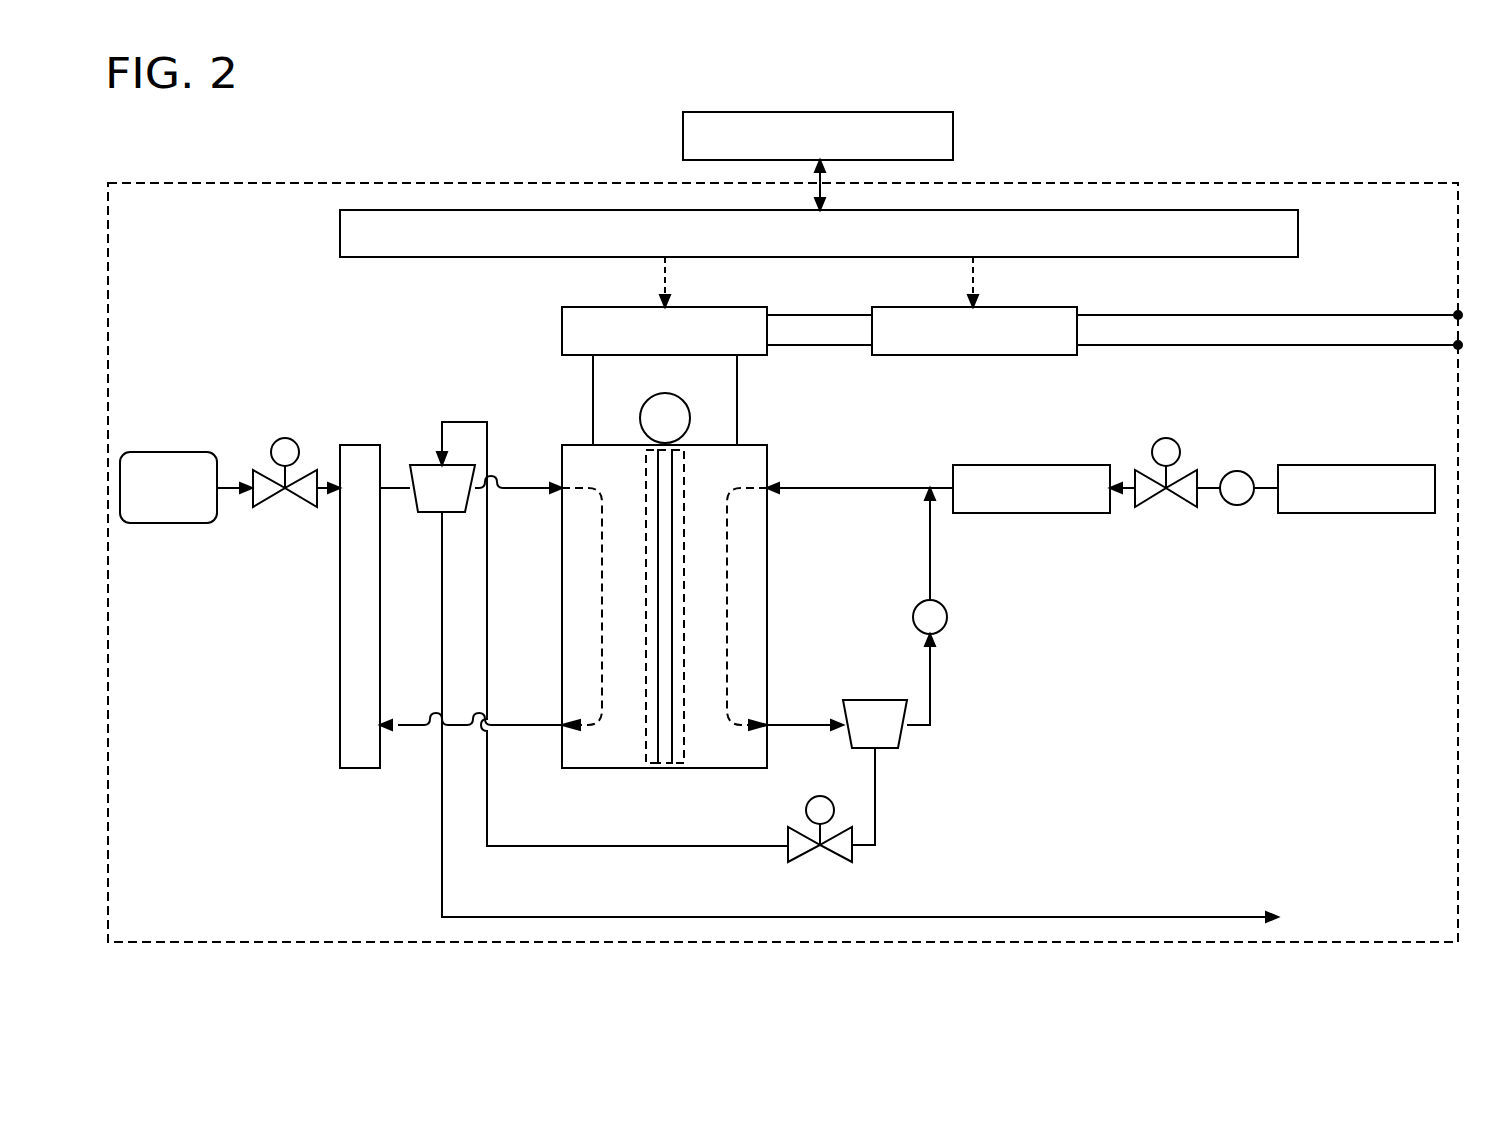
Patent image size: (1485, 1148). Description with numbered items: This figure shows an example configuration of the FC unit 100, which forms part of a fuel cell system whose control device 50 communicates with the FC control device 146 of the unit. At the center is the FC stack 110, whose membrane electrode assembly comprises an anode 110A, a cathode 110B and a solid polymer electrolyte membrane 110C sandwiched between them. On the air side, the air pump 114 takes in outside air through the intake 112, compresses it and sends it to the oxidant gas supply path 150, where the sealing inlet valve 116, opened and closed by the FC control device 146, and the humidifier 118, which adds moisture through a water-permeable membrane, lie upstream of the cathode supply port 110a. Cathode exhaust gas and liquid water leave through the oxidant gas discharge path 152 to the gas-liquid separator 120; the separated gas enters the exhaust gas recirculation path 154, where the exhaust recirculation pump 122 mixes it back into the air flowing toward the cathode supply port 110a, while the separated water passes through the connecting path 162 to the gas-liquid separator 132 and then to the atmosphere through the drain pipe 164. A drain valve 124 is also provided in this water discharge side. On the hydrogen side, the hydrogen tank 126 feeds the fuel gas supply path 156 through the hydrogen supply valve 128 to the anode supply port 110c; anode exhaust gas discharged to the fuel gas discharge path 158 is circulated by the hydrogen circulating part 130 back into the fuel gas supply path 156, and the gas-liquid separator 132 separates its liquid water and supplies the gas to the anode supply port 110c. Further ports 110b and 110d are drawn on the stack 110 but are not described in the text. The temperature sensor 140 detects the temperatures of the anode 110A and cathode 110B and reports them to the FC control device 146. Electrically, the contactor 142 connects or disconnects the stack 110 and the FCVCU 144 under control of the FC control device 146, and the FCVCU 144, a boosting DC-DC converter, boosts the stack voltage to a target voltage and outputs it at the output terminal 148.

The control device 50 is at (955, 135).
The FC unit 100 is at (1385, 183).
The FC control device 146 is at (1300, 234).
The contactor 142 is at (706, 307).
The fuel cell voltage control unit (FCVCU) 144 is at (1015, 307).
The output terminal 148 is at (1455, 314).
The temperature sensor 140 is at (668, 394).
The FC stack 110 is at (768, 605).
The anode 110A is at (652, 766).
The cathode 110B is at (679, 766).
The solid polymer electrolyte membrane 110C is at (664, 766).
The cathode supply port 110a is at (769, 485).
The cathode outlet 110b is at (769, 723).
The anode supply port 110c is at (560, 485).
The anode outlet 110d is at (560, 723).
The hydrogen tank 126 is at (155, 452).
The fuel gas supply path 156 is at (232, 495).
The hydrogen supply valve 128 is at (297, 505).
The hydrogen circulating part 130 is at (362, 445).
The gas-liquid separator 132 is at (427, 512).
The fuel gas discharge path 158 is at (412, 732).
The connecting path 162 is at (488, 787).
The drain pipe 164 is at (522, 916).
The intake 112 is at (1378, 465).
The air pump 114 is at (1237, 470).
The oxidant gas supply path 150 is at (1208, 492).
The sealing inlet valve 116 is at (1178, 507).
The humidifier 118 is at (1048, 465).
The exhaust recirculation pump 122 is at (948, 617).
The exhaust gas recirculation path 154 is at (932, 683).
The gas-liquid separator 120 is at (876, 700).
The oxidant gas discharge path 152 is at (802, 730).
The drain valve 124 is at (830, 858).